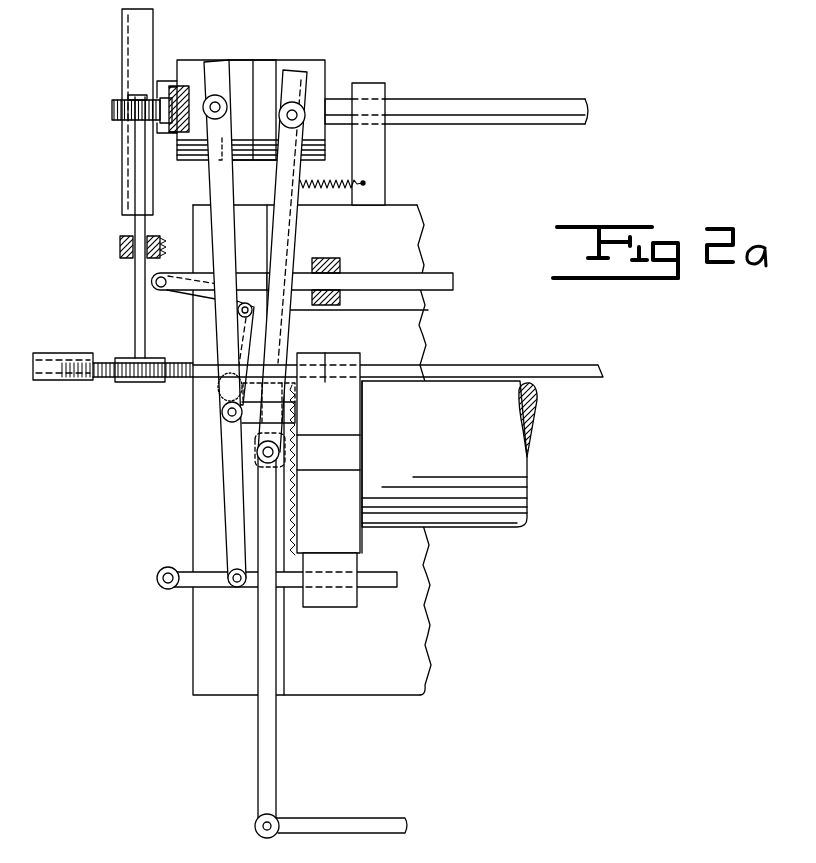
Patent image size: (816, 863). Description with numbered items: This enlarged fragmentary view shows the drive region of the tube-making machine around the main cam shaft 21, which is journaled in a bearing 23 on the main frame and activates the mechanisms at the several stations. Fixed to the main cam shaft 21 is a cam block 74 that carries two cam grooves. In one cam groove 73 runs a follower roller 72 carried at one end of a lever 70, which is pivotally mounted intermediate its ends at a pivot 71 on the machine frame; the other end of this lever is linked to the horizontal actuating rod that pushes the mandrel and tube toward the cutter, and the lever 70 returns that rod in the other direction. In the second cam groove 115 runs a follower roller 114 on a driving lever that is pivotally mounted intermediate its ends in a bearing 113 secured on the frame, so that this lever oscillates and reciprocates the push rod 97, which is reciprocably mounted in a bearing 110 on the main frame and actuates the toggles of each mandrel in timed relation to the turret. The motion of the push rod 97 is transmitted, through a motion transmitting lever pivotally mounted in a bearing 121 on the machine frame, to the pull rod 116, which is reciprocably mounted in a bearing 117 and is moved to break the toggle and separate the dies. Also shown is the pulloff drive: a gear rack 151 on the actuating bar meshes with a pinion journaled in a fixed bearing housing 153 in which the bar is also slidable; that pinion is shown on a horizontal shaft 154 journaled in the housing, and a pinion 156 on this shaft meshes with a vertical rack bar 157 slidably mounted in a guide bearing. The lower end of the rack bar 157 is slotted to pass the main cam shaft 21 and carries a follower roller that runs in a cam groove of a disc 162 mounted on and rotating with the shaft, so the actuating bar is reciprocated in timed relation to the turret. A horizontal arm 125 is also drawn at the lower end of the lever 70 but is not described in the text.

The main cam shaft 21 is at (563, 100).
The bearing 23 is at (385, 86).
The lever 70 is at (256, 782).
The pivot 71 is at (256, 456).
The follower roller 72 is at (295, 112).
The cam groove 73 is at (295, 72).
The cam block 74 is at (256, 60).
The push rod 97 is at (390, 592).
The bearing 110 is at (333, 607).
The bearing 113 is at (222, 392).
The follower roller 114 is at (212, 189).
The cam groove 115 is at (222, 70).
The pull rod 116 is at (453, 280).
The bearing 117 is at (340, 262).
The bearing 121 is at (222, 416).
The horizontal arm 125 is at (444, 840).
The gear rack 151 is at (118, 333).
The bearing housing 153 is at (74, 380).
The horizontal shaft 154 is at (145, 278).
The pinion 156 is at (112, 113).
The vertical rack bar 157 is at (160, 78).
The disc 162 is at (122, 30).